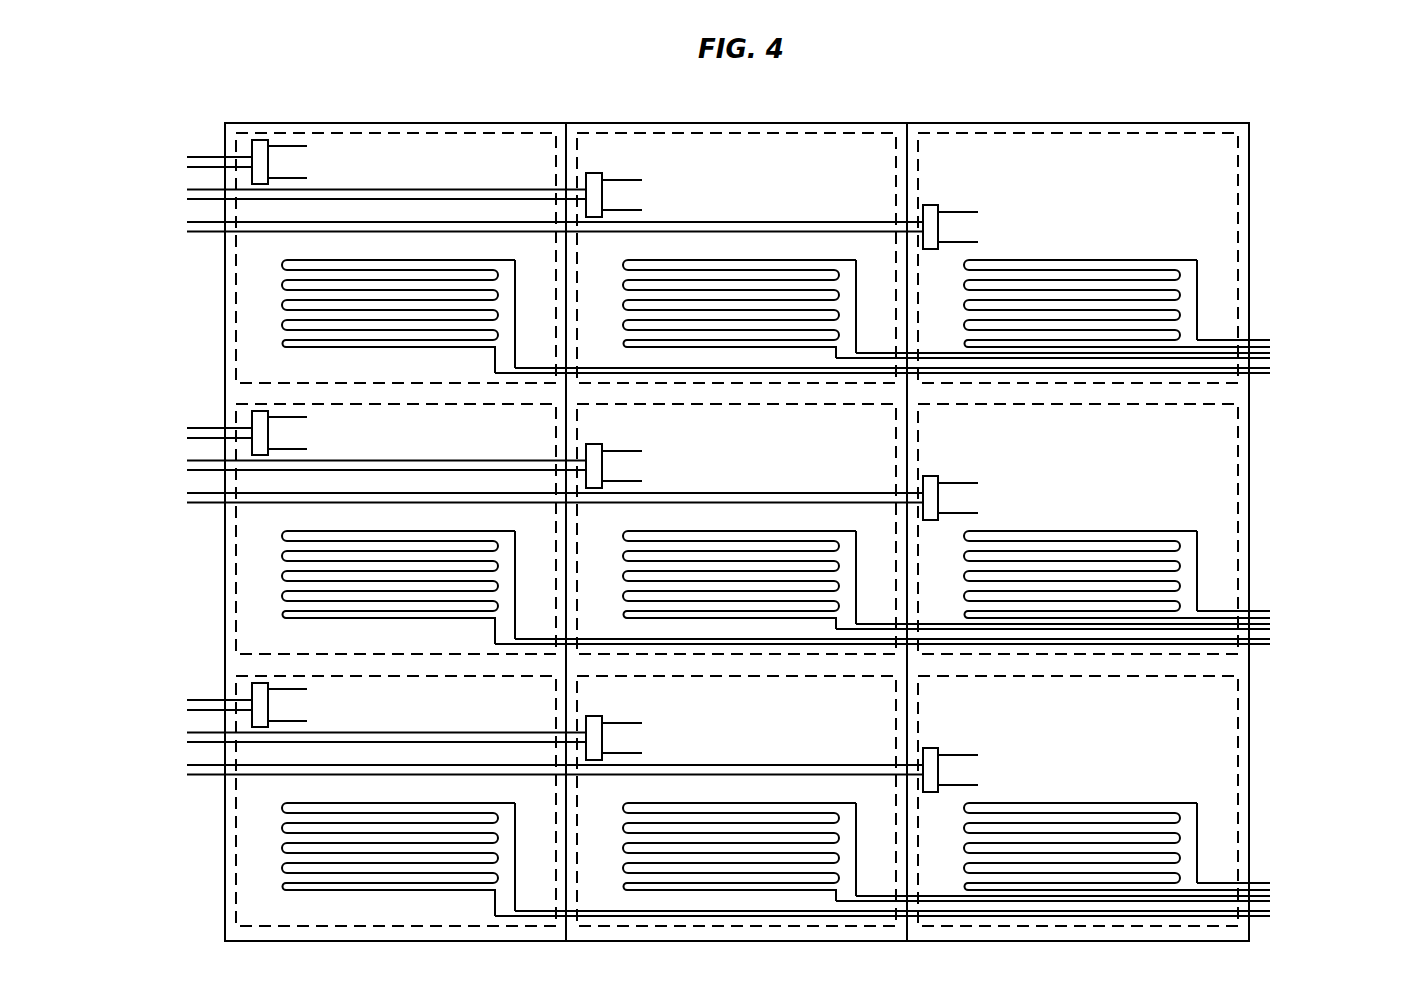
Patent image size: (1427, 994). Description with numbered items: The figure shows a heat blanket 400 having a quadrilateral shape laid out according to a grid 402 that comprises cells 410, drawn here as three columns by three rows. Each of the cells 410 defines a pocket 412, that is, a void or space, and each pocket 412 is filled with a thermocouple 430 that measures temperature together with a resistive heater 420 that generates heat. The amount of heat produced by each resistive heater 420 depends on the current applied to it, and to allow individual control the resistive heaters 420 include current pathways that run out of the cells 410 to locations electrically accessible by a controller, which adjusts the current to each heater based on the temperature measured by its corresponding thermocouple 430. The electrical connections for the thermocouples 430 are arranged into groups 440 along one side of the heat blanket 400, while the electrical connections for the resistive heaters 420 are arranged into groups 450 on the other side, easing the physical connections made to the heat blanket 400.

The heat blanket 400 is at (128, 343).
The grid 402 is at (1357, 950).
The cells 410 is at (409, 123).
The pockets 412 is at (541, 133).
The resistive heaters 420 is at (382, 348).
The thermocouple 430 is at (298, 146).
The groups 440 is at (180, 140).
The groups 450 is at (1273, 330).